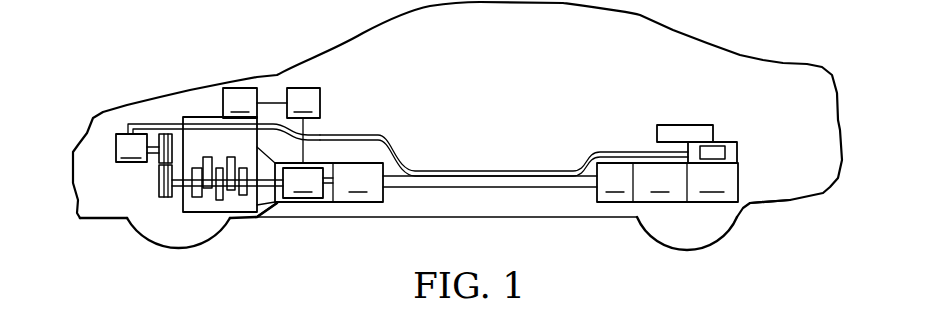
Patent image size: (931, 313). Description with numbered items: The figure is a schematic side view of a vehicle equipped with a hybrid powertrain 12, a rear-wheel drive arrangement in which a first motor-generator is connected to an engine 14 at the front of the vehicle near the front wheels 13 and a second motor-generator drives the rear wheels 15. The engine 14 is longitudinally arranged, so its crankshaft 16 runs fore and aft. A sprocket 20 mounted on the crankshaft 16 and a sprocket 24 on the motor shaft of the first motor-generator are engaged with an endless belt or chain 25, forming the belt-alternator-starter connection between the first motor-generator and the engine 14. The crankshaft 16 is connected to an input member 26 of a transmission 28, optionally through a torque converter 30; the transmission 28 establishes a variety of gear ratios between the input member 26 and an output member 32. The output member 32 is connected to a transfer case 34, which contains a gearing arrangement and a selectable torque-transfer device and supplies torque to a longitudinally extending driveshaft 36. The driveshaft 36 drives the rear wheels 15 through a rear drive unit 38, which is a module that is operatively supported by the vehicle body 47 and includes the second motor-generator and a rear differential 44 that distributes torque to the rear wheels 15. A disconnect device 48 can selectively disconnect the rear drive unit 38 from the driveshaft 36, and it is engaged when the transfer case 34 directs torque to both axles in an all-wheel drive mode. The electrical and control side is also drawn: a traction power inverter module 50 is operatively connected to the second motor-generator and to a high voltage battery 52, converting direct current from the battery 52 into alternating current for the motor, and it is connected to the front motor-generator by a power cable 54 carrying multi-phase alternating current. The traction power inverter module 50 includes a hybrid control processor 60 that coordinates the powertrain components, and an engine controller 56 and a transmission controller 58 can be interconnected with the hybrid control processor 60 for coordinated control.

The hybrid powertrain 12 is at (272, 72).
The front wheels 13 is at (181, 249).
The engine 14 is at (183, 148).
The rear wheels 15 is at (689, 251).
The crankshaft 16 is at (177, 193).
The sprocket 20 is at (166, 190).
The sprocket 24 is at (210, 123).
The belt or chain 25 is at (160, 166).
The input member 26 is at (280, 199).
The transmission 28 is at (303, 183).
The torque converter 30 is at (270, 210).
The output member 32 is at (331, 198).
The transfer case 34 is at (329, 182).
The driveshaft 36 is at (484, 189).
The rear drive unit 38 is at (748, 185).
The rear differential 44 is at (668, 182).
The vehicle body 47 is at (770, 208).
The disconnect device 48 is at (618, 182).
The traction power inverter module 50 is at (740, 150).
The high voltage battery 52 is at (680, 125).
The power cable 54 is at (463, 166).
The engine controller 56 is at (240, 103).
The transmission controller 58 is at (288, 125).
The hybrid control processor 60 is at (717, 142).